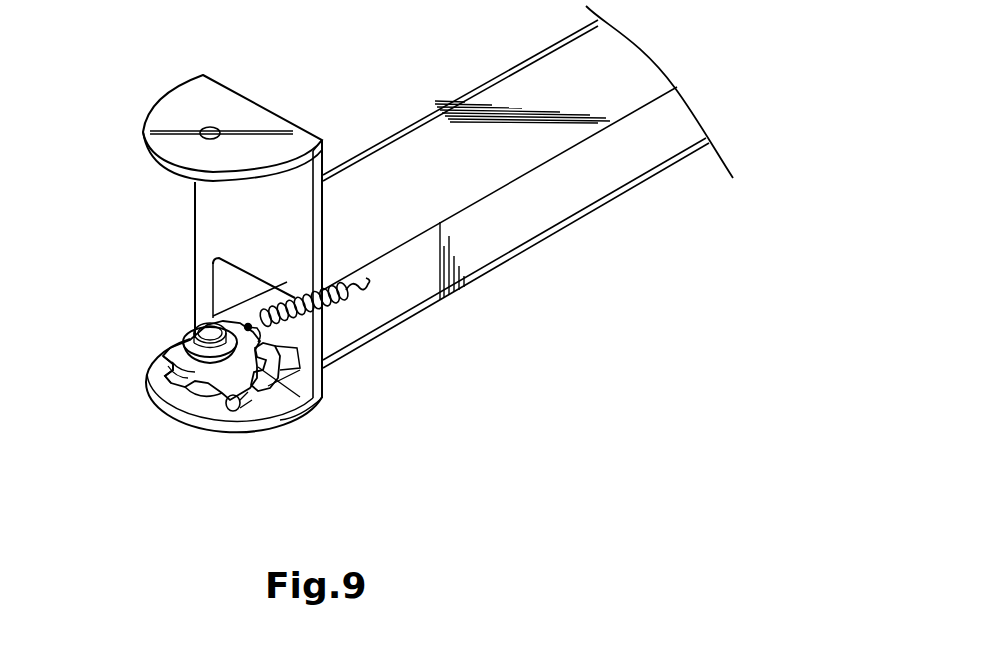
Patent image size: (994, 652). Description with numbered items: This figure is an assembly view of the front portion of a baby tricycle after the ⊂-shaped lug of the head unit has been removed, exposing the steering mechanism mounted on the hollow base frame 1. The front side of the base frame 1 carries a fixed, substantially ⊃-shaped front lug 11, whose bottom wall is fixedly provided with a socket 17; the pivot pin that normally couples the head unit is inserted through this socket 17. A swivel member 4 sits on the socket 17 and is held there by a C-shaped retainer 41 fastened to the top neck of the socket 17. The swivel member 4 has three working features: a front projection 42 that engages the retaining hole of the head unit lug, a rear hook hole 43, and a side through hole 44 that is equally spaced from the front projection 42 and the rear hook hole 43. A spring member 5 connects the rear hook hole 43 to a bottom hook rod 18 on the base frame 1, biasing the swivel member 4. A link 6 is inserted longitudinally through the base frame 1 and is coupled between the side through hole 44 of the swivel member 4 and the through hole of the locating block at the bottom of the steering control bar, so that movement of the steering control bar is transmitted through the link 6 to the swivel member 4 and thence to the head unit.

The hollow base frame 1 is at (573, 197).
The swivel member 4 is at (223, 373).
The spring member 5 is at (283, 285).
The link 6 is at (280, 352).
The front lug 11 is at (287, 131).
The socket 17 is at (197, 393).
The bottom hook rod 18 is at (357, 288).
The C-shaped retainer 41 is at (193, 343).
The front projection 42 is at (170, 380).
The rear hook hole 43 is at (247, 323).
The side through hole 44 is at (252, 388).